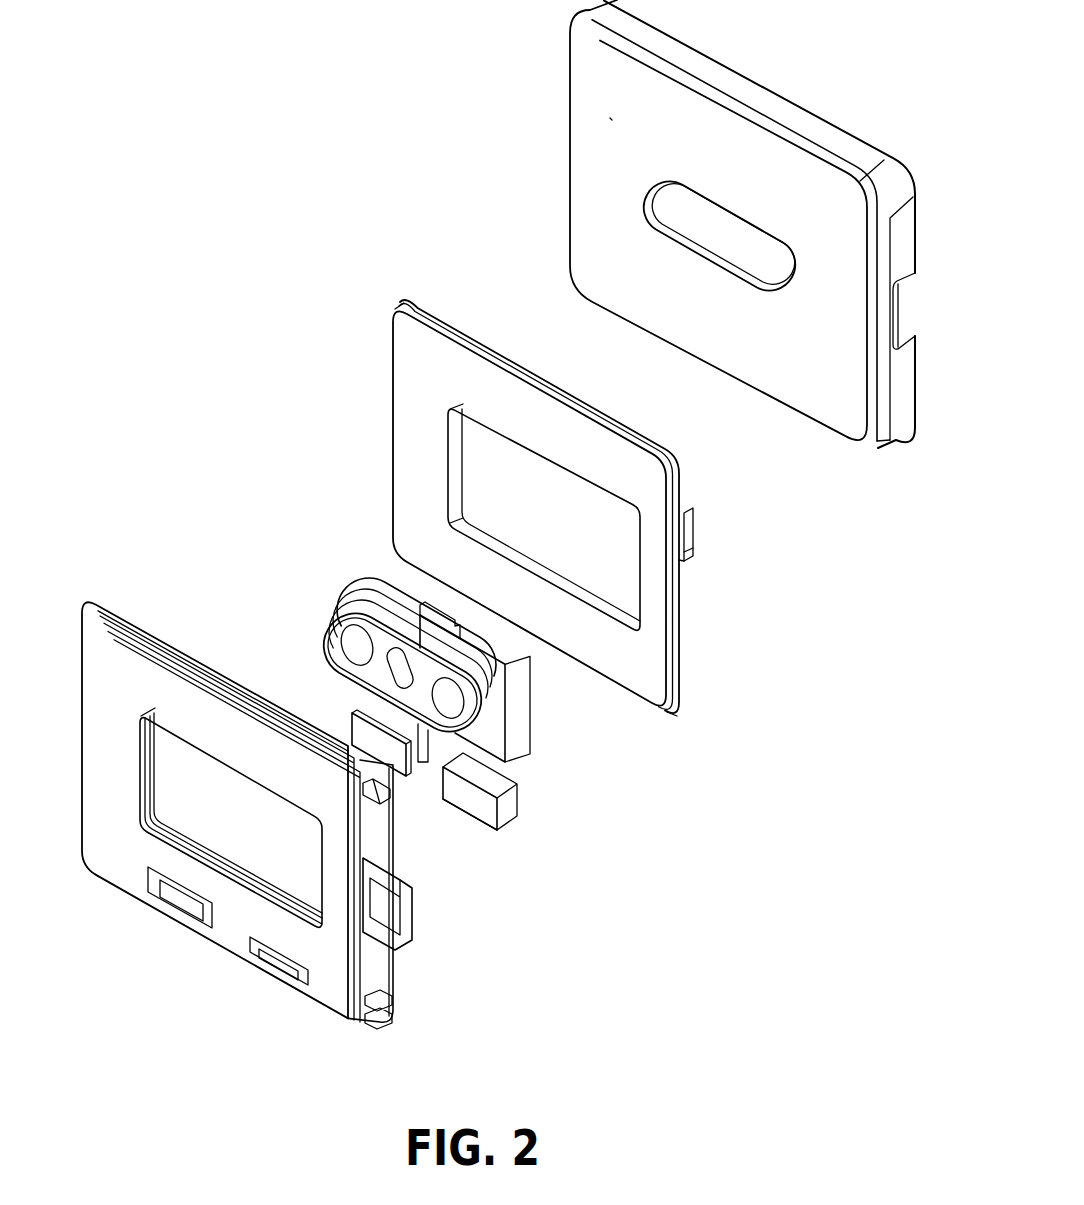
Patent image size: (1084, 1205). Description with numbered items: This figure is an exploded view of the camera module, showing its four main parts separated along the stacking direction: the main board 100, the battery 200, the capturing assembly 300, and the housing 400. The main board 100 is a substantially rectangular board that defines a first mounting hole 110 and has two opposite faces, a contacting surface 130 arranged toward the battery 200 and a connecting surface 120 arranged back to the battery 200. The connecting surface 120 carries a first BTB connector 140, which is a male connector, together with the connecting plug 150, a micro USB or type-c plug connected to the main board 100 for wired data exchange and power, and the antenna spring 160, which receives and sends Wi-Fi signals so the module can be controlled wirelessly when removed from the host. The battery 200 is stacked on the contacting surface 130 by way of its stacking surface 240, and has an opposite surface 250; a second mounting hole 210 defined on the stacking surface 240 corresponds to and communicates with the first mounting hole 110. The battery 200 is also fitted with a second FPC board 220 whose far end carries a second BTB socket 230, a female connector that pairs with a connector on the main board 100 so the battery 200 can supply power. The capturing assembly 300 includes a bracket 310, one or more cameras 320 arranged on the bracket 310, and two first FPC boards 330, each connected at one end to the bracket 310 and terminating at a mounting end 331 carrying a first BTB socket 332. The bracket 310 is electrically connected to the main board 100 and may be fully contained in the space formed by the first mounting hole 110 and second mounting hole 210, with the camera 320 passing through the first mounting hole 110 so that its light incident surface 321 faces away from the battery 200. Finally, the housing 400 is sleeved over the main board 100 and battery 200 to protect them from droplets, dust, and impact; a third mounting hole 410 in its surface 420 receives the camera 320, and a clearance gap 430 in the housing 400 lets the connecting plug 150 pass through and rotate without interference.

The main board 100 is at (288, 808).
The first mounting hole 110 is at (233, 820).
The connecting surface 120 is at (118, 858).
The contacting surface 130 is at (160, 634).
The first board to board (BTB) connector 140 is at (258, 952).
The connecting plug 150 is at (387, 926).
The antenna spring 160 is at (387, 797).
The battery 200 is at (552, 492).
The second mounting hole 210 is at (490, 516).
The second FPC board 220 is at (699, 518).
The second BTB socket 230 is at (698, 560).
The stacking surface 240 is at (410, 500).
The surface 250 is at (455, 326).
The capturing assembly 300 is at (466, 728).
The bracket 310 is at (527, 688).
The camera 320 is at (432, 684).
The light incident surface 321 is at (345, 648).
The first flexible printed circuit (FPC) board 330 is at (521, 815).
The mounting end 331 is at (460, 805).
The first BTB socket 332 is at (378, 728).
The housing 400 is at (701, 234).
The third mounting hole 410 is at (683, 211).
The surface 420 is at (612, 118).
The clearance gap 430 is at (897, 332).